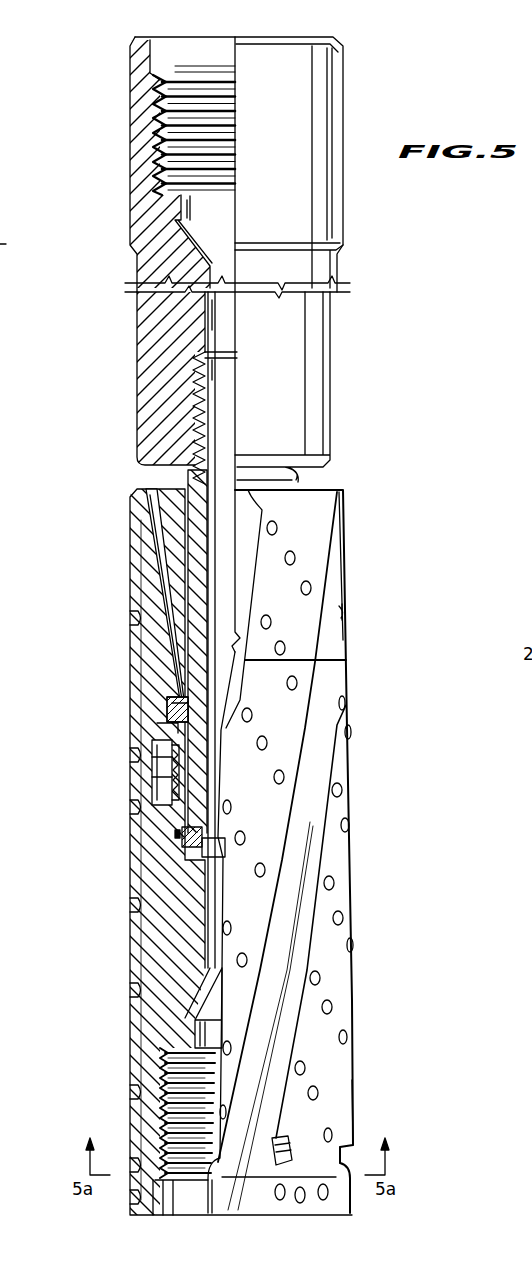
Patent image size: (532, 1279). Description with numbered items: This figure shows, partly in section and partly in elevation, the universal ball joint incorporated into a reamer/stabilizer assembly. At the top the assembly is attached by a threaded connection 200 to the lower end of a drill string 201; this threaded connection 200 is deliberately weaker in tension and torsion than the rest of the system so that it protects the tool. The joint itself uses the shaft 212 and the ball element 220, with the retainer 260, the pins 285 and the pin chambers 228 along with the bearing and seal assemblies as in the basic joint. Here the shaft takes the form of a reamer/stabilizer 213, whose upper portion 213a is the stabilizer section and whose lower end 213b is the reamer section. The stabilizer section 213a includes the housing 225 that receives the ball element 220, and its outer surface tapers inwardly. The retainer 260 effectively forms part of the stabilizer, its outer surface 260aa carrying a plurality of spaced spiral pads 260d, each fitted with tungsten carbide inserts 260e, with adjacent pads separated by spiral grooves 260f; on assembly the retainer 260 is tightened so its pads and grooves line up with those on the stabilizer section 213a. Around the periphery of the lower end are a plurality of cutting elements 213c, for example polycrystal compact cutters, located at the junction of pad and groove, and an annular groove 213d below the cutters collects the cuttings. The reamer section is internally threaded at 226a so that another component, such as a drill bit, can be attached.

The threaded connection 200 is at (195, 393).
The drill string 201 is at (330, 318).
The shaft 212 is at (160, 510).
The reamer/stabilizer 213 is at (364, 744).
The upper portion (stabilizer section) 213a is at (347, 672).
The lower end (reamer section) 213b is at (352, 1093).
The cutting elements 213c is at (292, 1150).
The annular groove 213d is at (302, 1203).
The ball element 220 is at (160, 755).
The housing 225 is at (137, 747).
The internal thread 226a is at (160, 1128).
The pin chambers 228 is at (150, 797).
The retainer 260 is at (145, 560).
The outer surface 260aa is at (343, 610).
The spiral pads 260d is at (353, 530).
The tungsten carbide inserts 260e is at (277, 524).
The spiral grooves 260f is at (322, 718).
The pins 285 is at (185, 843).